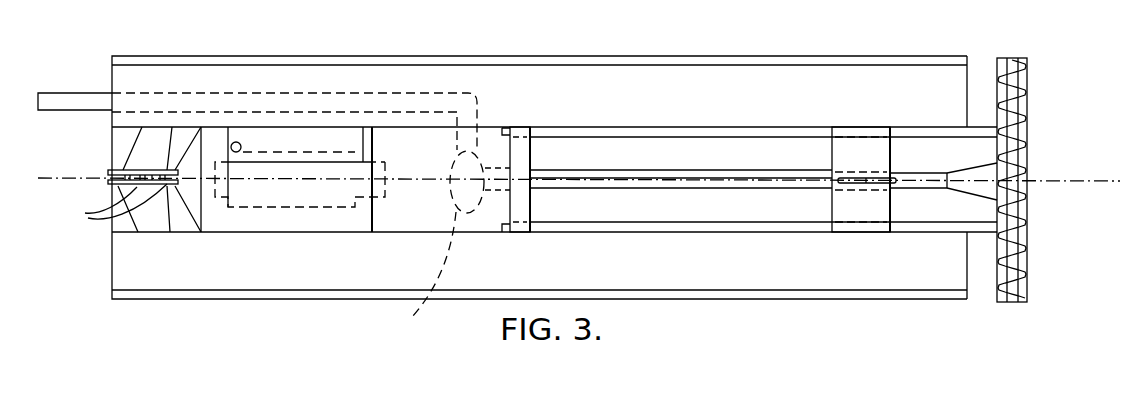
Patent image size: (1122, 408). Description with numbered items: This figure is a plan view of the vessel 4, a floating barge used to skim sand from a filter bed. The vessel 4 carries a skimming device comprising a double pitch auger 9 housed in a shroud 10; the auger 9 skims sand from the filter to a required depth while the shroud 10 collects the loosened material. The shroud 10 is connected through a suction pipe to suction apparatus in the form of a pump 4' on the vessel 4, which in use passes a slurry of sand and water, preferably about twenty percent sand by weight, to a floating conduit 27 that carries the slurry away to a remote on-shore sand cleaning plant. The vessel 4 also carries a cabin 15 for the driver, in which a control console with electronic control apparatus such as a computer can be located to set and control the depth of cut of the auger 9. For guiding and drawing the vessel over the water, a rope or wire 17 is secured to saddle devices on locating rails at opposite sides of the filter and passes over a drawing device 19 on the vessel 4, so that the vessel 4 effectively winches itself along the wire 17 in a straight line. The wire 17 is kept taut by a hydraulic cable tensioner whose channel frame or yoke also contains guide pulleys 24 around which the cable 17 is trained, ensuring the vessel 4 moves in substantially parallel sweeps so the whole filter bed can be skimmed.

The vessel 4 is at (554, 194).
The pump 4' is at (432, 244).
The double pitch auger 9 is at (1047, 180).
The shroud 10 is at (1033, 133).
The cabin 15 is at (424, 155).
The rope or wire 17 is at (72, 178).
The drawing device 19 is at (860, 163).
The guide pulleys 24 is at (88, 218).
The floating conduit 27 is at (77, 97).